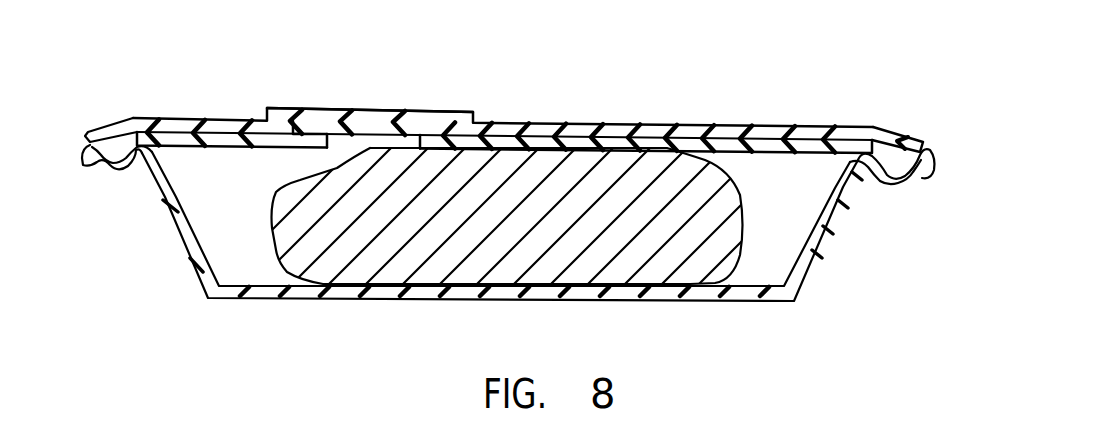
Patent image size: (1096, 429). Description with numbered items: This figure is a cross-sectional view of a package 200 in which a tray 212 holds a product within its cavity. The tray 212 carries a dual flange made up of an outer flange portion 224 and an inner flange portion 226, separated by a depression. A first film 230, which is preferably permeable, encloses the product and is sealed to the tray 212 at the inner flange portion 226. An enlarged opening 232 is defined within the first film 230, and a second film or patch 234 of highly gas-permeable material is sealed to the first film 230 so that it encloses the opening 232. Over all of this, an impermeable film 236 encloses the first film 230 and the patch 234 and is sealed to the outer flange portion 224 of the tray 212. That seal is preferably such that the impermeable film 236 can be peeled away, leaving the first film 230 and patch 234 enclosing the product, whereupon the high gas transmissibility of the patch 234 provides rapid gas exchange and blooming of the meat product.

The package 200 is at (250, 88).
The tray 212 is at (824, 290).
The outer flange portion 224 is at (924, 143).
The inner flange portion 226 is at (870, 168).
The first film 230 is at (812, 145).
The enlarged opening 232 is at (358, 147).
The patch 234 is at (413, 140).
The impermeable film 236 is at (638, 130).